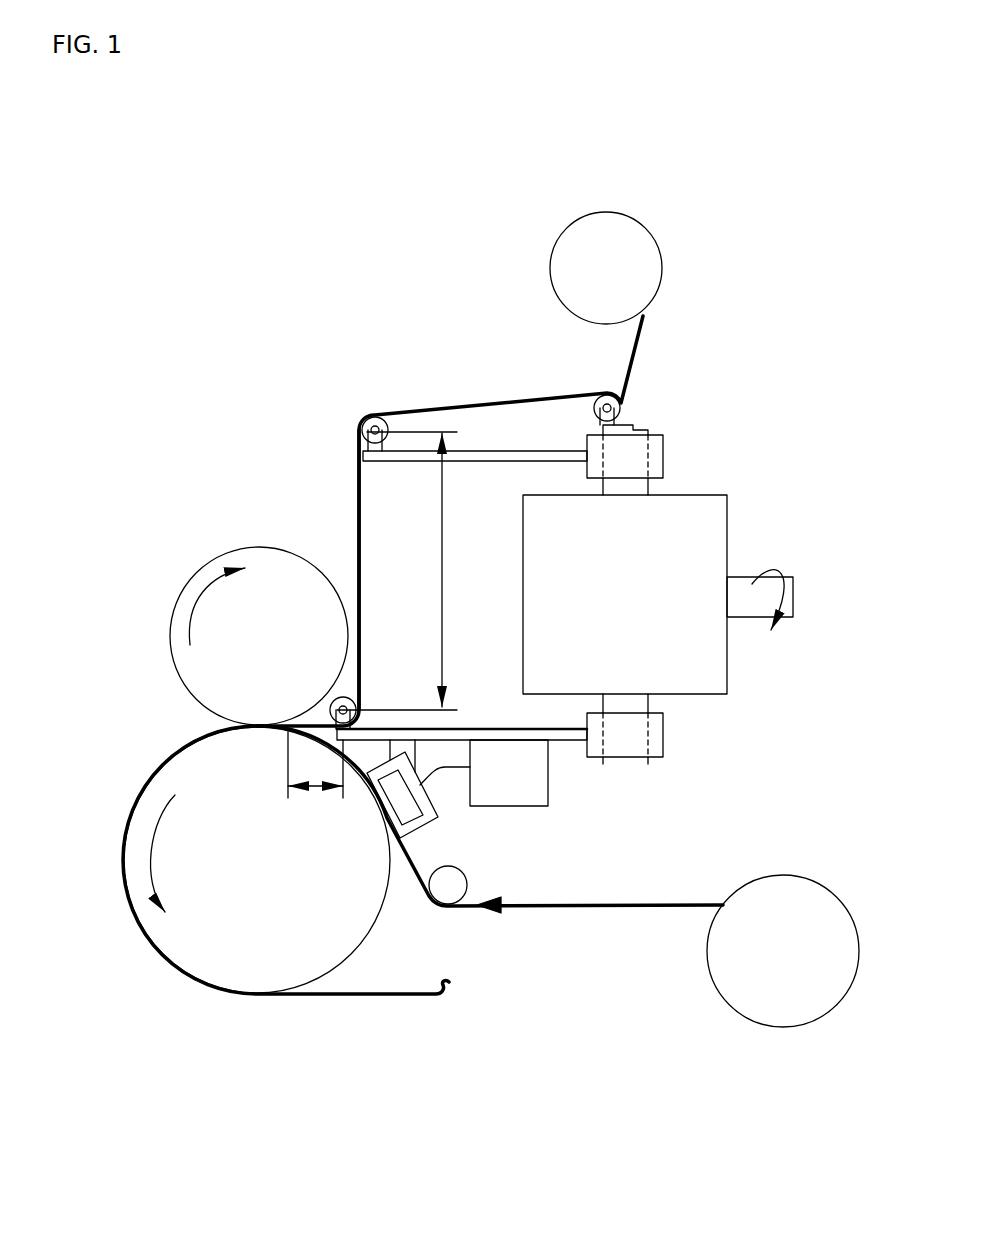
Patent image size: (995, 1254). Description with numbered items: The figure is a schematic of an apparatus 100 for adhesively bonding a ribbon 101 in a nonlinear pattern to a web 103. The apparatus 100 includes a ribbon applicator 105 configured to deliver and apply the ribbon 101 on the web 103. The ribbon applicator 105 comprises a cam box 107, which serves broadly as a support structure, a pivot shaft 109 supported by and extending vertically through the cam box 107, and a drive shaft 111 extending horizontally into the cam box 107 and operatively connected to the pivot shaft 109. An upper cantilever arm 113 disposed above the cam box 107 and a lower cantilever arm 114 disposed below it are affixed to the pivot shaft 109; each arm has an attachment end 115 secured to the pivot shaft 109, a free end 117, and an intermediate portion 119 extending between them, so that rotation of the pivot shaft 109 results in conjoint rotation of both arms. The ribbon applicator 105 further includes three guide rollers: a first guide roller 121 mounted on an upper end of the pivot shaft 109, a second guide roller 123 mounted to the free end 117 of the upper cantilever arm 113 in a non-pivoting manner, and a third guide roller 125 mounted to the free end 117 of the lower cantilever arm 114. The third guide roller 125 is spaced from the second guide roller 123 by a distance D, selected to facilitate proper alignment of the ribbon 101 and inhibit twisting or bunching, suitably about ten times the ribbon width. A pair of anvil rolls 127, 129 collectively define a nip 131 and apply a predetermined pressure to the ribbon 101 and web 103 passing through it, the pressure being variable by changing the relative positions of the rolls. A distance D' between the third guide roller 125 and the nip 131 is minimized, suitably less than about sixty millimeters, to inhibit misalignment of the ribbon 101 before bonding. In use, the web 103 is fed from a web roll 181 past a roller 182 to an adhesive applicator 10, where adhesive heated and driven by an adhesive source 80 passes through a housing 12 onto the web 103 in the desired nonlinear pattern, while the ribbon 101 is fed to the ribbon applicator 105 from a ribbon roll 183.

The apparatus 100 is at (730, 388).
The ribbon 101 is at (357, 493).
The web 103 is at (417, 875).
The ribbon applicator 105 is at (733, 512).
The cam box 107 is at (715, 660).
The pivot shaft 109 is at (632, 705).
The drive shaft 111 is at (748, 582).
The upper cantilever arm 113 is at (388, 458).
The lower cantilever arm 114 is at (387, 737).
The attachment end 115 is at (653, 453).
The free end 117 is at (363, 457).
The intermediate portion 119 is at (485, 461).
The first guide roller 121 is at (600, 397).
The second guide roller 123 is at (382, 427).
The third guide roller 125 is at (337, 697).
The anvil roll 127 is at (200, 555).
The anvil roll 129 is at (220, 947).
The nip 131 is at (200, 724).
The web roll 181 is at (783, 1027).
The roller 182 is at (448, 885).
The ribbon roll 183 is at (605, 212).
The adhesive source 80 is at (540, 787).
The adhesive applicator 10 is at (422, 835).
The housing 12 is at (437, 818).
The distance D is at (409, 571).
The distance D' is at (226, 772).